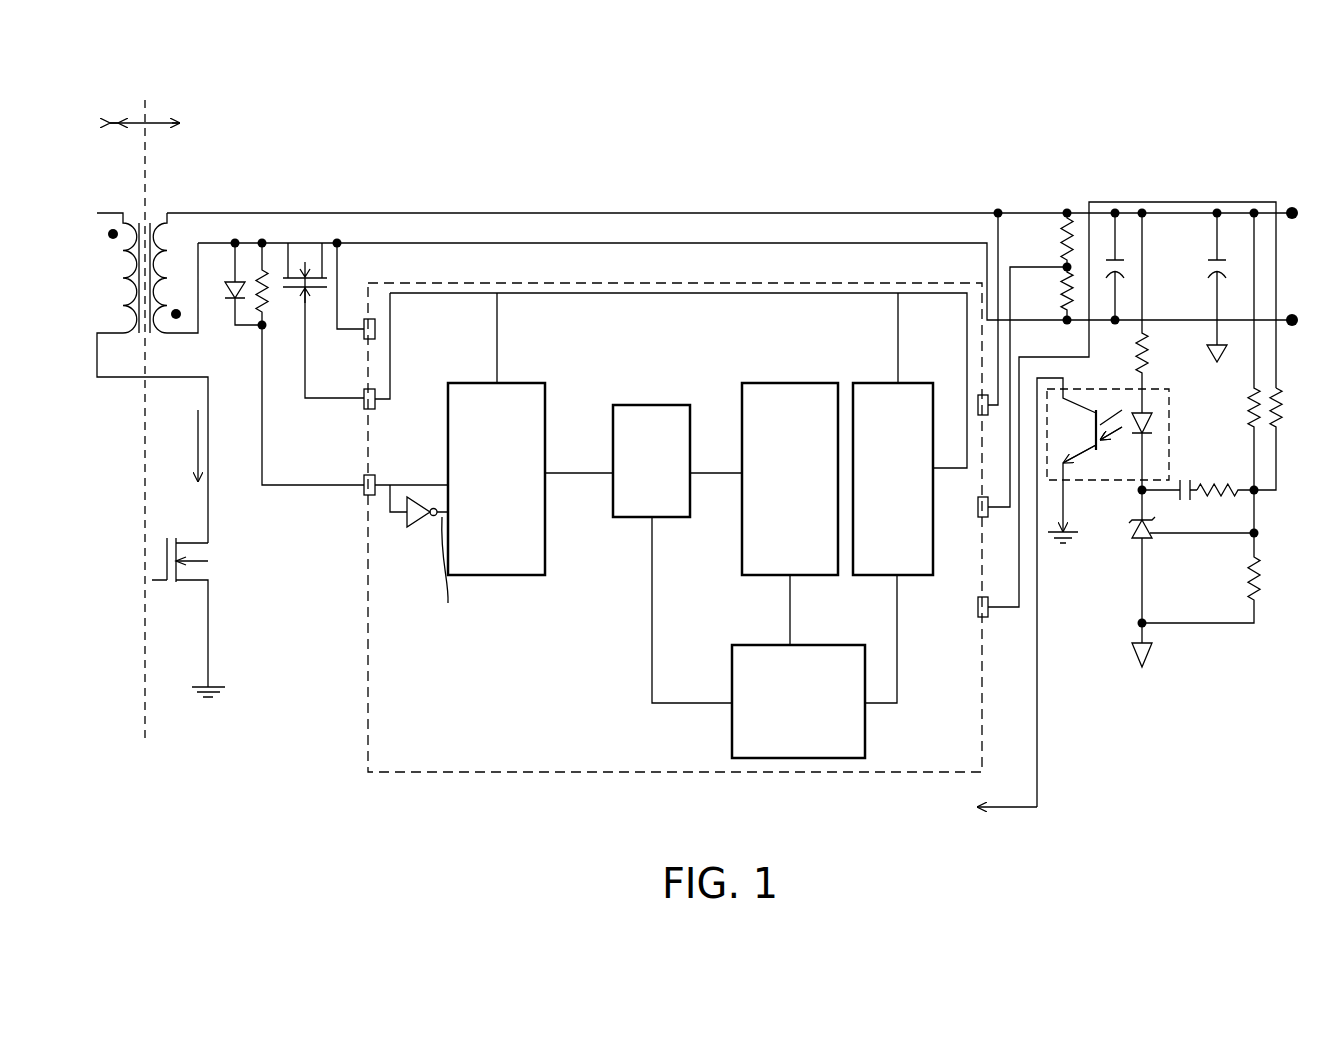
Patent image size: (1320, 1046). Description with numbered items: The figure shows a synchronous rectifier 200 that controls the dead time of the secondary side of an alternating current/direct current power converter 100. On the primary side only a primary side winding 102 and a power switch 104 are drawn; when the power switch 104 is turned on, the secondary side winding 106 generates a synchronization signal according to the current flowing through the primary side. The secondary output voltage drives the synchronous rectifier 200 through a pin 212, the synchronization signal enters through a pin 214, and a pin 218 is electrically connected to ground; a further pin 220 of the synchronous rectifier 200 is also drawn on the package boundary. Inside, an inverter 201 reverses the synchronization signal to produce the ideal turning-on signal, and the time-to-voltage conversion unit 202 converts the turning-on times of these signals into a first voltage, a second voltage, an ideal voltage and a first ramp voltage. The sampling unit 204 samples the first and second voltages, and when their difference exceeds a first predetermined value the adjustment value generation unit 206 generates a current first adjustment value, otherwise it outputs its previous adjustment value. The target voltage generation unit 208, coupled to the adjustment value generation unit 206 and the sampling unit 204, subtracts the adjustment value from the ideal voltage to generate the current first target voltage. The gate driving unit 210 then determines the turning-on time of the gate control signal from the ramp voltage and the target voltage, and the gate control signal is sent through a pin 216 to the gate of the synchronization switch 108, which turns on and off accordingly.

The power converter 100 is at (690, 450).
The primary side winding 102 is at (125, 266).
The power switch 104 is at (188, 586).
The secondary side winding 106 is at (160, 213).
The synchronization switch 108 is at (295, 250).
The synchronous rectifier 200 is at (627, 772).
The inverter 201 is at (410, 527).
The time-to-voltage conversion unit 202 is at (520, 383).
The sampling unit 204 is at (655, 404).
The adjustment value generation unit 206 is at (790, 383).
The target voltage generation unit 208 is at (763, 644).
The gate driving unit 210 is at (907, 383).
The pin 212 is at (981, 417).
The pin 214 is at (364, 475).
The pin 216 is at (362, 389).
The pin 218 is at (370, 319).
The feedback pin 220 is at (982, 618).